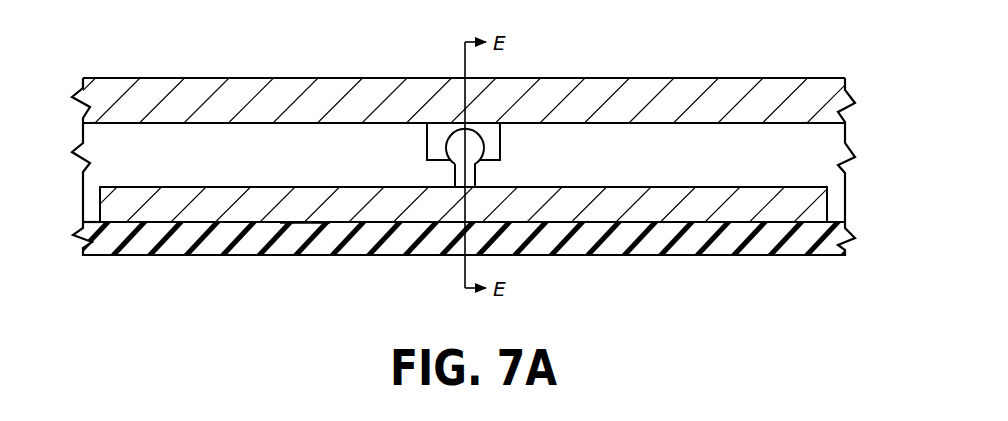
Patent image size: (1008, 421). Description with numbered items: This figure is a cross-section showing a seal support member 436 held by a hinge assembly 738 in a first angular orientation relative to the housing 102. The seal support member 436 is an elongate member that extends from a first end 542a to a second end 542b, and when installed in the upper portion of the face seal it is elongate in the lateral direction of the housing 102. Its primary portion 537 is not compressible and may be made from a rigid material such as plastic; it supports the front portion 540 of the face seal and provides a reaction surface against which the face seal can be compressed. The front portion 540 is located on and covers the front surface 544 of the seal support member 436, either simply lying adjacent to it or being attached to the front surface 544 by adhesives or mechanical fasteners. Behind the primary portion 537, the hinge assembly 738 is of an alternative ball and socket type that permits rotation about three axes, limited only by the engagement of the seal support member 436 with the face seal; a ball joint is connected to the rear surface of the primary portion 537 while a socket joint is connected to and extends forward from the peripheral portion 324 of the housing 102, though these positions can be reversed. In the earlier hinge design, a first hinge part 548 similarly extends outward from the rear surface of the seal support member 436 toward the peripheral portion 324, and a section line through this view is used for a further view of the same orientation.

The housing 102 is at (148, 63).
The peripheral portion 324 is at (773, 77).
The first hinge part 548 is at (826, 131).
The primary portion 537 is at (818, 193).
The seal support member 436 is at (84, 210).
The hinge assembly 738 is at (412, 161).
The first end 542a is at (104, 214).
The front surface 544 is at (300, 224).
The front portion 540 is at (553, 256).
The second end 542b is at (827, 213).